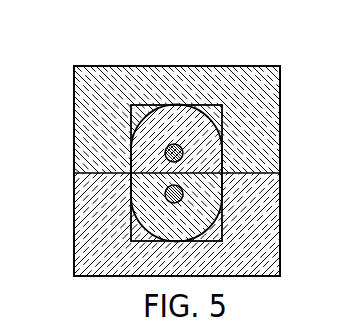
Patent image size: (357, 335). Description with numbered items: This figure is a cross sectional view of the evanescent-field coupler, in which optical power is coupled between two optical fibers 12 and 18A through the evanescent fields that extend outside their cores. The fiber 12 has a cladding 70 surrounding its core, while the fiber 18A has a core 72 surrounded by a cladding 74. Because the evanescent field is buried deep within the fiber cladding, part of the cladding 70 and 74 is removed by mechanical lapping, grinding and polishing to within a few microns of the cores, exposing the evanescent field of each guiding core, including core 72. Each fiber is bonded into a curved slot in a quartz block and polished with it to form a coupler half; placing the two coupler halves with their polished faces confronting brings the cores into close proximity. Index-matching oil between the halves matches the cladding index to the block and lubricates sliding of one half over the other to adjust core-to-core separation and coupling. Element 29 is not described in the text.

The housing body 29 is at (93, 66).
The optical fiber 12 is at (222, 172).
The optical fiber 18A is at (200, 232).
The cladding 70 is at (169, 147).
The core 72 is at (165, 195).
The cladding 74 is at (255, 277).